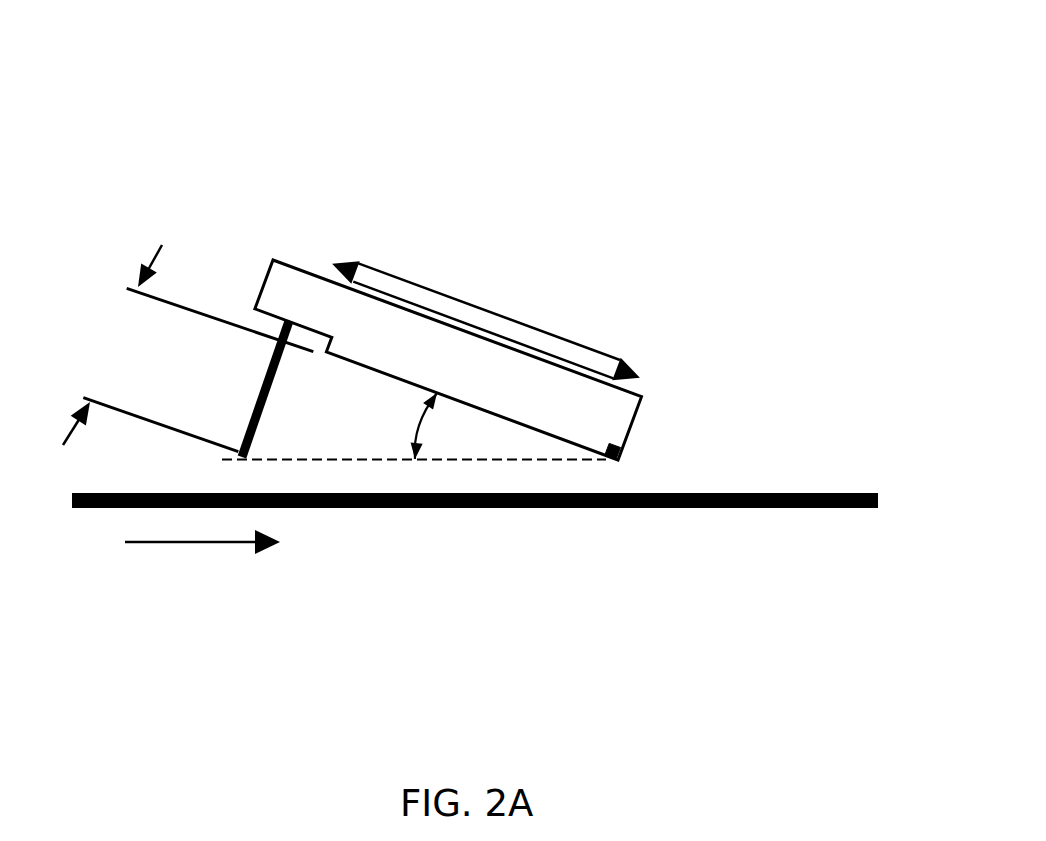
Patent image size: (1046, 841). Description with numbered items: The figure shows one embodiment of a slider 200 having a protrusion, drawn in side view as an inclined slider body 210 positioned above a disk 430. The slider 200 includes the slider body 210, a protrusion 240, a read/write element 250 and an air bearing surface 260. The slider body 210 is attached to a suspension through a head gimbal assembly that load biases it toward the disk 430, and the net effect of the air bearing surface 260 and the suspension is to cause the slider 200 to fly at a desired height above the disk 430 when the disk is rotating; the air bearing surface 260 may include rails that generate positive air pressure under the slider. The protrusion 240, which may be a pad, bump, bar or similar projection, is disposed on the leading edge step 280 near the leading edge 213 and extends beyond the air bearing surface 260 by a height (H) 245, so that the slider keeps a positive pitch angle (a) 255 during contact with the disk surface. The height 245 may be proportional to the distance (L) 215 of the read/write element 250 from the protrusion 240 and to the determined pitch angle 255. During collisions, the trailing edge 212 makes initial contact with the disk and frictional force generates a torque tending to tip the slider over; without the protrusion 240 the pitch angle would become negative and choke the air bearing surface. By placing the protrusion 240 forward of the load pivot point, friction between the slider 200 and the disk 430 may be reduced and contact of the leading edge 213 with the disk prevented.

The slider 200 is at (622, 120).
The slider body 210 is at (458, 369).
The trailing edge 212 is at (603, 470).
The leading edge 213 is at (278, 253).
The distance (L) 215 is at (533, 334).
The protrusion 240 is at (260, 400).
The height (H) 245 is at (162, 245).
The read/write element 250 is at (623, 448).
The pitch angle (a) 255 is at (417, 423).
The air bearing surface 260 is at (366, 398).
The leading edge step 280 is at (284, 282).
The disk 430 is at (858, 510).